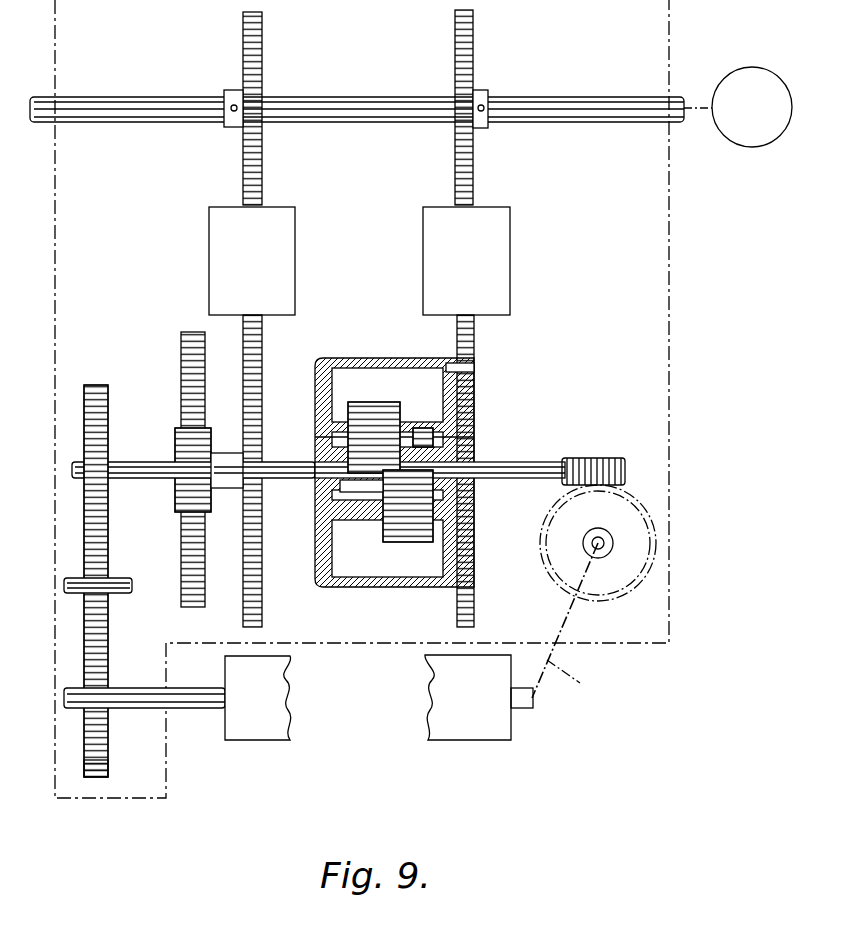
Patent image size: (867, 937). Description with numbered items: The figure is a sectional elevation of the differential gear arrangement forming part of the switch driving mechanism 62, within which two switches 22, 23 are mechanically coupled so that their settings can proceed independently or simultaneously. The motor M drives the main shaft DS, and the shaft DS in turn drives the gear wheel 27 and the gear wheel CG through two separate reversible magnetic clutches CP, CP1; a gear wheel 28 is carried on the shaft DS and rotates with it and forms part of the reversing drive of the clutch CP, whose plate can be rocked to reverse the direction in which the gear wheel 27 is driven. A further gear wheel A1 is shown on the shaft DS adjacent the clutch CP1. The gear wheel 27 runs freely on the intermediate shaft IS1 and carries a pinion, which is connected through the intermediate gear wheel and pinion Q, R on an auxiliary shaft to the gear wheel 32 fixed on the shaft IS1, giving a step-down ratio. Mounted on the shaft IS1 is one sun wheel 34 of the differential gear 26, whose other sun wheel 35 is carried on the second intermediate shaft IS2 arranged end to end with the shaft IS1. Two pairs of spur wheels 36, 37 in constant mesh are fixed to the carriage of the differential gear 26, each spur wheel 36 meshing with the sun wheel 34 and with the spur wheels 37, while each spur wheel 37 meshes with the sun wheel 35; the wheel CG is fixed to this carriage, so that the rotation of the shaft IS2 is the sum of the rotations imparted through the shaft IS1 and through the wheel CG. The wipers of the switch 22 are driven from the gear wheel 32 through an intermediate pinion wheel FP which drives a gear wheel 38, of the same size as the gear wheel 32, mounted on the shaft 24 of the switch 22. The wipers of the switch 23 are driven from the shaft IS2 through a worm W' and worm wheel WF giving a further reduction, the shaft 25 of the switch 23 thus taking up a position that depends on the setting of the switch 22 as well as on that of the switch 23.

The driving mechanism 62 is at (670, 243).
The main shaft DS is at (570, 100).
The motor M is at (752, 107).
The gear wheel 28 is at (262, 42).
The gear A1 is at (473, 42).
The reversible magnetic clutch CP is at (209, 217).
The reversible magnetic clutch CP1 is at (510, 225).
The gear wheel 27 is at (262, 342).
The gear wheel CG is at (475, 343).
The intermediate gear wheel Q is at (181, 352).
The intermediate pinion R is at (176, 437).
The intermediate shaft IS1 is at (134, 468).
The gear wheel 32 is at (86, 388).
The gear wheel 38 is at (100, 778).
The differential gear 26 is at (374, 355).
The second intermediate shaft IS2 is at (530, 468).
The spur wheels 36 is at (350, 397).
The spur wheels 37 is at (400, 545).
The sun wheel 35 is at (440, 437).
The sun wheel 34 is at (356, 492).
The worm W' is at (593, 442).
The worm wheel WF is at (645, 542).
The shaft 25 is at (535, 698).
The intermediate pinion wheel FP is at (108, 603).
The shaft 24 is at (199, 710).
The switch 22 is at (272, 737).
The switch 23 is at (457, 737).